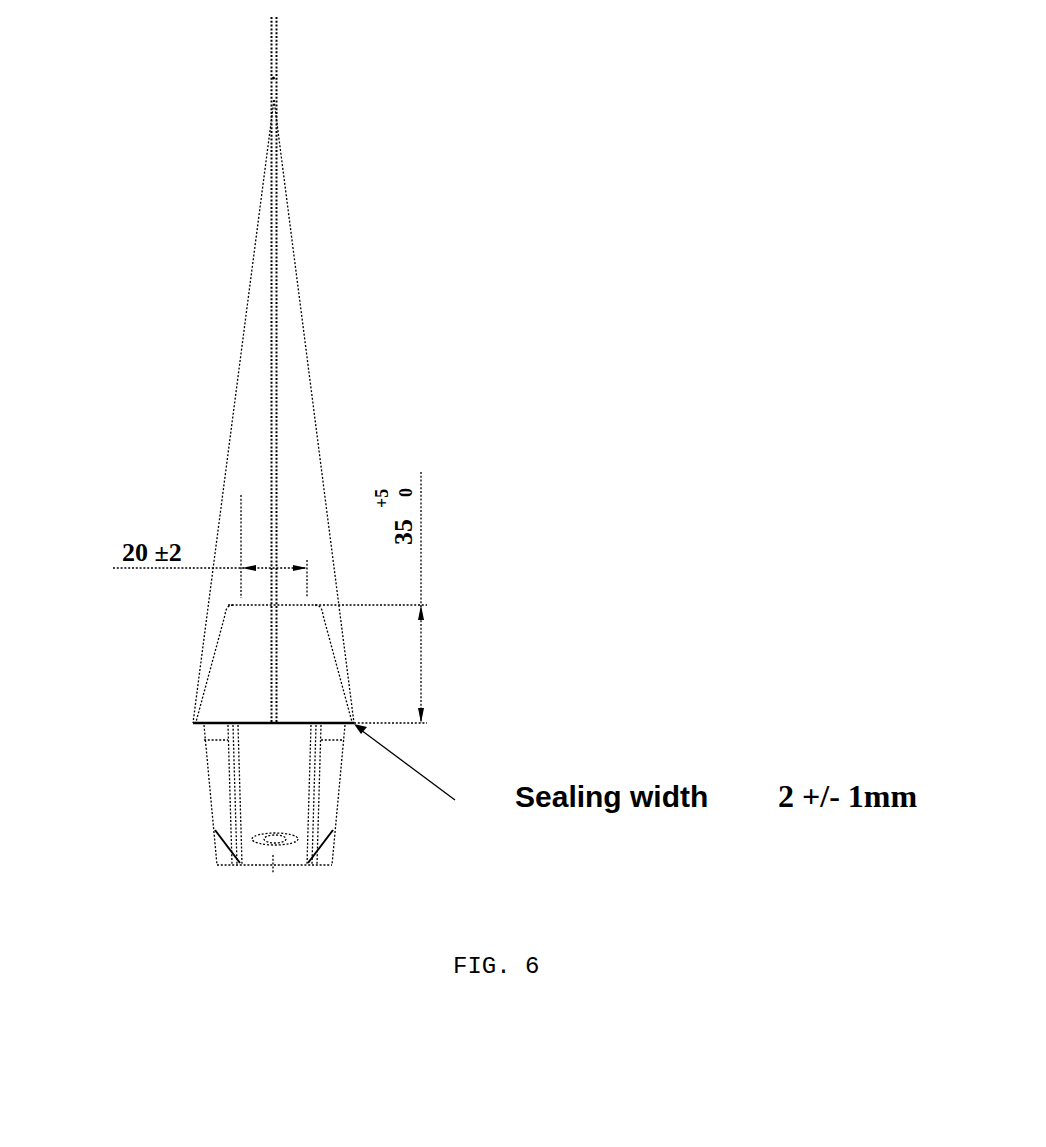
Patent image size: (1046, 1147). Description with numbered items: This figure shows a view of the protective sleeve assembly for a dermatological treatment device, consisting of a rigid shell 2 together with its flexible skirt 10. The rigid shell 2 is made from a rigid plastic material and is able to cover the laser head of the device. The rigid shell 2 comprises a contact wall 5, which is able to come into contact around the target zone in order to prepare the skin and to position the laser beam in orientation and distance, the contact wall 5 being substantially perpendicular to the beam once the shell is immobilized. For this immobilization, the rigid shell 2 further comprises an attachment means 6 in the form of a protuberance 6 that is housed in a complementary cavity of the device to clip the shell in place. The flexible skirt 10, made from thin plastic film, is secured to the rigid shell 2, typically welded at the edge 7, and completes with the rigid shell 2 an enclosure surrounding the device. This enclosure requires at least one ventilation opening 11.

The rigid shell 2 is at (200, 846).
The contact wall 5 is at (288, 870).
The attachment means 6 is at (262, 831).
The edge 7 is at (195, 727).
The flexible skirt 10 is at (190, 677).
The ventilation opening 11 is at (305, 566).